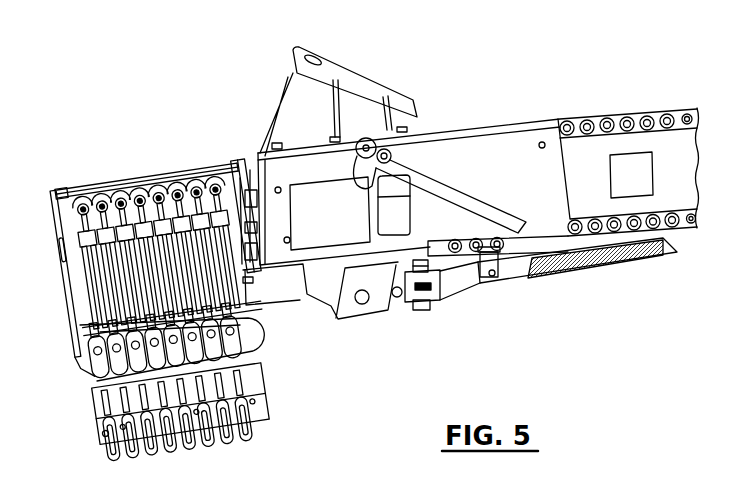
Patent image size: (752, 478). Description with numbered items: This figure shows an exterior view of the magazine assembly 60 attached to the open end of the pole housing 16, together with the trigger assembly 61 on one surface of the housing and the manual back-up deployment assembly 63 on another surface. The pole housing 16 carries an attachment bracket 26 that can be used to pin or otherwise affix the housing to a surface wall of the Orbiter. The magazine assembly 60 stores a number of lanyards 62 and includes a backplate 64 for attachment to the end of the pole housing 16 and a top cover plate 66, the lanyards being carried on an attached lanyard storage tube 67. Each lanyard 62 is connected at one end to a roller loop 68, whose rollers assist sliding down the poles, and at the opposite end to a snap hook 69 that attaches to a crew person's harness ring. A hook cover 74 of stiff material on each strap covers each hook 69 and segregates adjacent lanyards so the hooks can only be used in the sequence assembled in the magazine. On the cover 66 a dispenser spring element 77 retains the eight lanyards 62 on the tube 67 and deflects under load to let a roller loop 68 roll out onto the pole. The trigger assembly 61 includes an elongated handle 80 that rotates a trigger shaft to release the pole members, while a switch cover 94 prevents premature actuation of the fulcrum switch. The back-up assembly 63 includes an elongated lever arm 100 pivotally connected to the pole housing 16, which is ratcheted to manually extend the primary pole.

The pole housing 16 is at (521, 121).
The attachment bracket 26 is at (373, 71).
The magazine assembly 60 is at (147, 163).
The trigger assembly 61 is at (424, 157).
The lanyard 62 is at (87, 273).
The manual back-up deployment assembly 63 is at (491, 285).
The backplate 64 is at (272, 421).
The top cover plate 66 is at (90, 186).
The lanyard storage tube 67 is at (72, 243).
The roller loop 68 is at (218, 188).
The snap hook 69 is at (223, 351).
The hook cover 74 is at (263, 332).
The dispenser spring element 77 is at (63, 192).
The elongated handle 80 is at (432, 185).
The switch cover 94 is at (498, 233).
The lever arm 100 is at (514, 277).